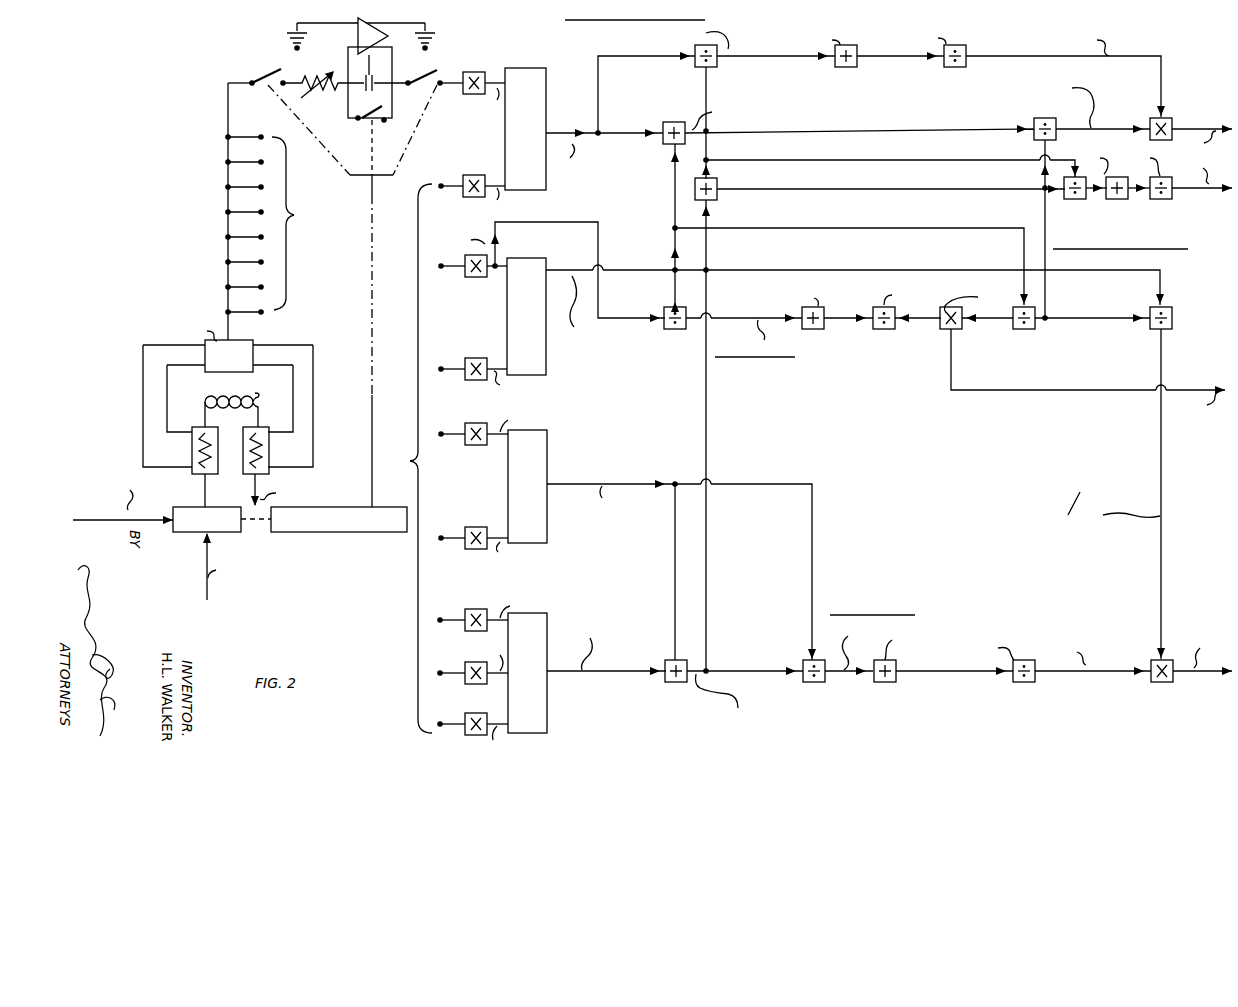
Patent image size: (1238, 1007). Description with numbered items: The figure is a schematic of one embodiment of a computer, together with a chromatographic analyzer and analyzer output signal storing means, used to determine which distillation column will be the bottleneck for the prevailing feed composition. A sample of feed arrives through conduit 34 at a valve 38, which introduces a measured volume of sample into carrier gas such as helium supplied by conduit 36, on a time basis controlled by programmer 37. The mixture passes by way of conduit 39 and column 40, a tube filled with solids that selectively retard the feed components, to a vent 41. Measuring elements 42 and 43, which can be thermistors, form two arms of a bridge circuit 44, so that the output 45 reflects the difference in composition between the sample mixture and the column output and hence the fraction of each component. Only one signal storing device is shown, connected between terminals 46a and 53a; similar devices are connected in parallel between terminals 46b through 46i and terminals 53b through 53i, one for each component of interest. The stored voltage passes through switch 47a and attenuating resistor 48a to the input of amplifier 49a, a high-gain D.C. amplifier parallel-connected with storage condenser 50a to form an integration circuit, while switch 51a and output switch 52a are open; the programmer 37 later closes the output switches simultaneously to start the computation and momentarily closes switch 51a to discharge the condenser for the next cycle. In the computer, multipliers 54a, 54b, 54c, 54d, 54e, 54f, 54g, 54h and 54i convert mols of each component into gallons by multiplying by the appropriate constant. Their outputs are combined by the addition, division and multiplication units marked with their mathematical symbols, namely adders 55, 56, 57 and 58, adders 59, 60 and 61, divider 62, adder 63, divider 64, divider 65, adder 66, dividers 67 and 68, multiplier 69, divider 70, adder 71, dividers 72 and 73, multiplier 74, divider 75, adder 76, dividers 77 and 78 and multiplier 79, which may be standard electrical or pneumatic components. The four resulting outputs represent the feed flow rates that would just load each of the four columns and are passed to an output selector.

The conduit 34 is at (207, 598).
The conduit 36 is at (83, 520).
The programmer 37 is at (341, 532).
The valve 38 is at (217, 532).
The conduit 39 is at (200, 482).
The column 40 is at (217, 397).
The vent 41 is at (260, 480).
The measuring element 42 is at (198, 427).
The measuring element 43 is at (252, 410).
The bridge circuit 44 is at (251, 341).
The output 45 is at (228, 137).
The terminal 46a is at (252, 82).
The terminal 46b is at (278, 224).
The terminal 46i is at (283, 223).
The switch 47a is at (268, 73).
The attenuating resistor 48a is at (303, 84).
The amplifier 49a is at (369, 20).
The storage condenser 50a is at (366, 78).
The switch 51a is at (364, 118).
The output switch 52a is at (436, 74).
The output terminal 53a is at (440, 88).
The output terminal 53b is at (406, 322).
The output terminal 53i is at (421, 597).
The multiplier 54a is at (478, 72).
The multiplier 54b is at (479, 175).
The multiplier 54c is at (482, 278).
The multiplier 54d is at (478, 380).
The multiplier 54e is at (480, 445).
The multiplier 54f is at (478, 549).
The multiplier 54g is at (478, 609).
The multiplier 54h is at (477, 684).
The multiplier 54i is at (468, 735).
The adder 55 is at (547, 68).
The adder 56 is at (538, 260).
The adder 57 is at (546, 438).
The adder 58 is at (540, 716).
The adder 59 is at (692, 120).
The adder 60 is at (686, 682).
The adder 61 is at (717, 198).
The divider 62 is at (1069, 199).
The adder 63 is at (1116, 199).
The divider 64 is at (1165, 199).
The divider 65 is at (812, 683).
The adder 66 is at (882, 682).
The divider 67 is at (1015, 682).
The divider 68 is at (1163, 328).
The multiplier 69 is at (1155, 682).
The divider 70 is at (721, 63).
The adder 71 is at (851, 45).
The divider 72 is at (963, 45).
The divider 73 is at (1054, 118).
The multiplier 74 is at (1171, 118).
The divider 75 is at (678, 332).
The adder 76 is at (819, 331).
The divider 77 is at (884, 328).
The divider 78 is at (1024, 328).
The multiplier 79 is at (957, 328).